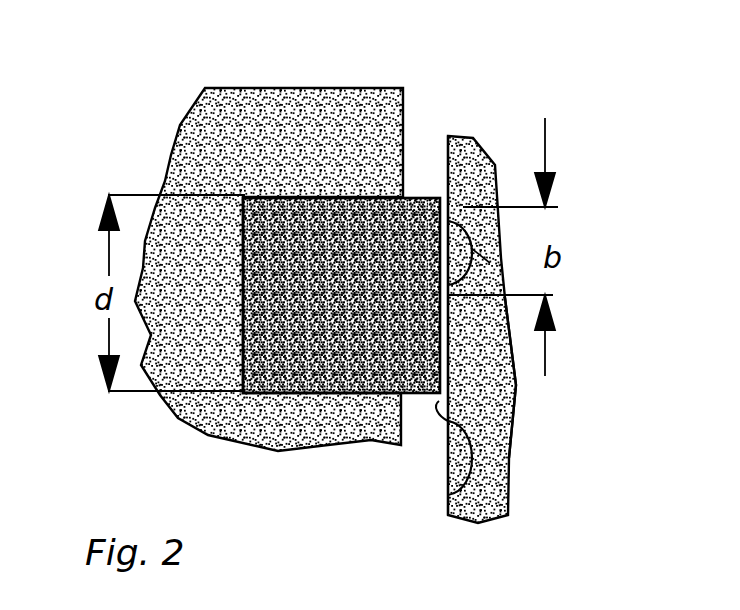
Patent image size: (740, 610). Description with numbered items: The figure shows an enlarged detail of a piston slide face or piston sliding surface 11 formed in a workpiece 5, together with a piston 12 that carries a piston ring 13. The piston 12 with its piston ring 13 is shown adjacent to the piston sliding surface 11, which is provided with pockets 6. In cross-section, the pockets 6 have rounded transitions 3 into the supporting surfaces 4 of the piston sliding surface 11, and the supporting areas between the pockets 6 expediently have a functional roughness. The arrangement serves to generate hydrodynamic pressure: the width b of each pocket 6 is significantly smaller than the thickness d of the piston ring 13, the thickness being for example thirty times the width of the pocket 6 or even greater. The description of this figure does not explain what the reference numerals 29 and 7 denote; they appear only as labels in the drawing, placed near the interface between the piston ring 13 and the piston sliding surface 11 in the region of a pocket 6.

The piston 12 is at (202, 142).
The piston ring 13 is at (285, 195).
The supporting surfaces 4 is at (441, 131).
The contact face 29 is at (440, 213).
The pockets 6 is at (472, 228).
The web 7 is at (480, 253).
The workpiece 5 is at (493, 401).
The rounded transitions 3 is at (452, 430).
The piston slide face or piston sliding surface 11 is at (428, 495).